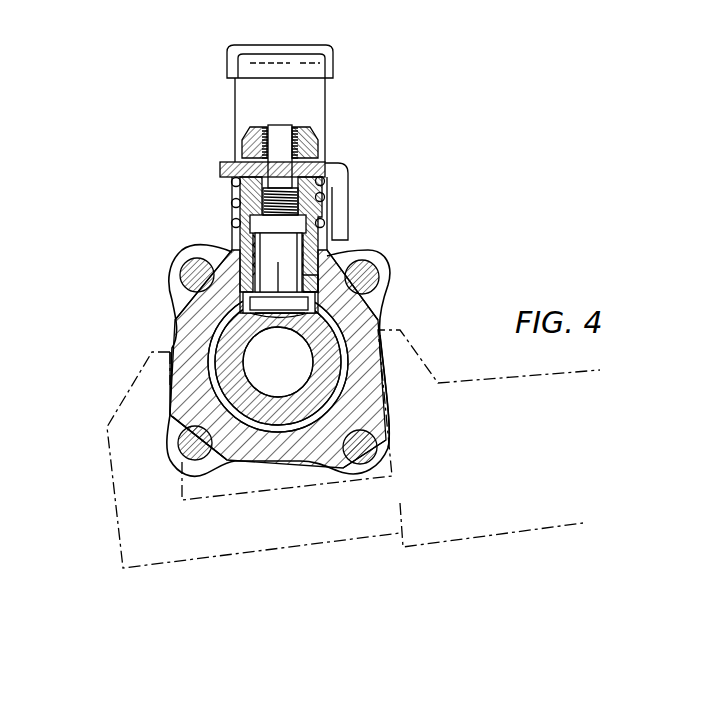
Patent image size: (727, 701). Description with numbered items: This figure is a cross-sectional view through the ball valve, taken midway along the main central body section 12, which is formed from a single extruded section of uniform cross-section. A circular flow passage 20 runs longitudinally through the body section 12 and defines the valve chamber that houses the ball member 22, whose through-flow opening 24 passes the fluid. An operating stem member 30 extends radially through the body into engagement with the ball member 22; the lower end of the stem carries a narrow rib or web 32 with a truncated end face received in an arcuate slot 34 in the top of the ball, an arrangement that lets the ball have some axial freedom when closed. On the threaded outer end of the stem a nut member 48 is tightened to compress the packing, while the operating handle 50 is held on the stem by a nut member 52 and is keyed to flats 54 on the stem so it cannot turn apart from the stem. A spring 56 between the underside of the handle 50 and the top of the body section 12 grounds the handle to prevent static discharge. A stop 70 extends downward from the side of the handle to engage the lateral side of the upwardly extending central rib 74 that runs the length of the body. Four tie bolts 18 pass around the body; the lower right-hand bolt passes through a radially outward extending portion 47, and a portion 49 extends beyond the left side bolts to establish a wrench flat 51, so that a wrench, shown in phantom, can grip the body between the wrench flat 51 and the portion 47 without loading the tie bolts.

The main central body section 12 is at (243, 361).
The tie bolts 18 is at (178, 283).
The circular flow passage 20 is at (213, 347).
The ball member 22 is at (332, 375).
The through-flow opening 24 is at (287, 397).
The operating stem member 30 is at (300, 157).
The rib or web 32 is at (300, 312).
The arcuate slot 34 is at (262, 314).
The radially outward extending portion 47 is at (388, 444).
The nut member 48 is at (242, 194).
The portion extending outwardly beyond the left side tie bolts 49 is at (176, 414).
The operating handle 50 is at (323, 103).
The wrench flat 51 is at (168, 392).
The nut member 52 is at (250, 130).
The flats 54 is at (277, 155).
The spring 56 is at (326, 198).
The stop 70 is at (348, 183).
The central rib 74 is at (323, 248).